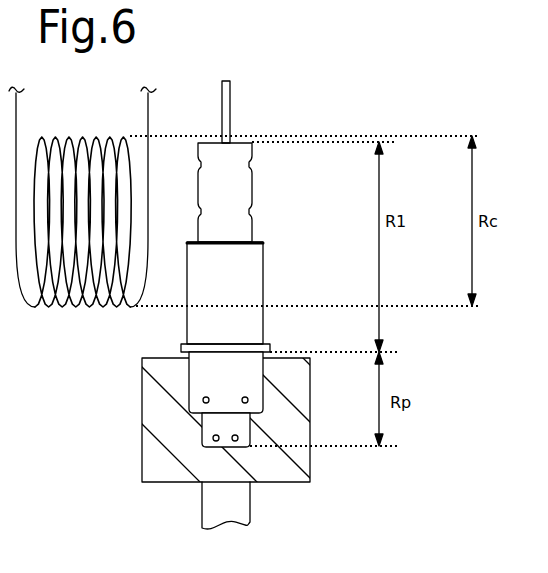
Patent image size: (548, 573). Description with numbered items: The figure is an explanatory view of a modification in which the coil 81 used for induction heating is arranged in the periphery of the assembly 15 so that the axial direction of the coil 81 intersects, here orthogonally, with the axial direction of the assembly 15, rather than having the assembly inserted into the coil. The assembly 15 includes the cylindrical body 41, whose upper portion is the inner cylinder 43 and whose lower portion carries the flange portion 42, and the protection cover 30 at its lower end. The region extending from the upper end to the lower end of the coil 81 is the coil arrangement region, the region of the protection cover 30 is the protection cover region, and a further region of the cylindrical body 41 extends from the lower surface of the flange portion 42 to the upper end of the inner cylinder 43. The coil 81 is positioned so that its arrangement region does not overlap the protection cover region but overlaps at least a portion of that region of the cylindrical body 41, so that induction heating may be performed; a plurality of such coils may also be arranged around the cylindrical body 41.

The assembly 15 is at (273, 304).
The protection cover 30 is at (188, 386).
The cylindrical body 41 is at (276, 243).
The flange portion 42 is at (323, 222).
The inner cylinder 43 is at (245, 237).
The coil 81 is at (43, 307).